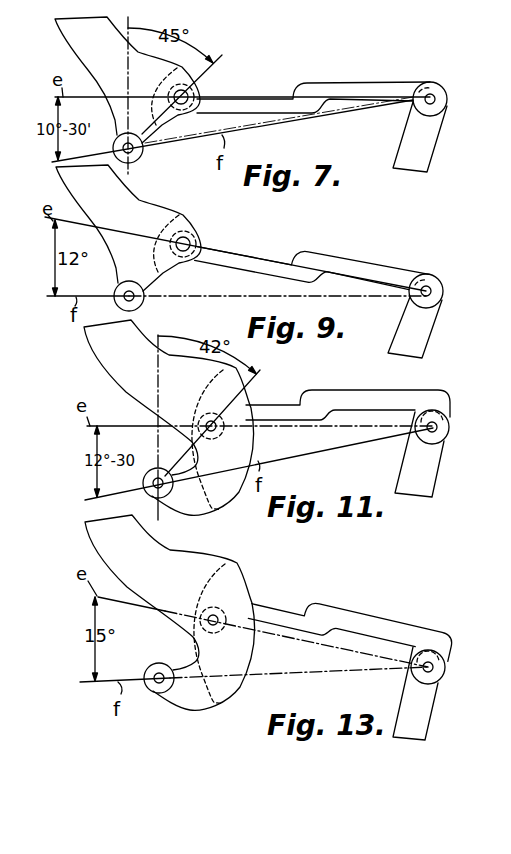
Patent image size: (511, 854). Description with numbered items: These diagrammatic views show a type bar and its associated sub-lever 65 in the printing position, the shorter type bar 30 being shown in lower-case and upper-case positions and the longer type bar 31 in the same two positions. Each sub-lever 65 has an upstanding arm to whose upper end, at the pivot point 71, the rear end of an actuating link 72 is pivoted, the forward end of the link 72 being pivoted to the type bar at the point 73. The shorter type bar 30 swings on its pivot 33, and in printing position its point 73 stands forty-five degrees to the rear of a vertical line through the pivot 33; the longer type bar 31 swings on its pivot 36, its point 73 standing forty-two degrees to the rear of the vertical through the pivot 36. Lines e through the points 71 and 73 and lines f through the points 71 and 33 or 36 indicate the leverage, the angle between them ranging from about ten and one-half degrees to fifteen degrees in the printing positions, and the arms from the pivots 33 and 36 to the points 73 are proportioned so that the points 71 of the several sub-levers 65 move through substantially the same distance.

In FIG. 7, the type bar 30 is at (127, 80).
In FIG. 9, the type bar 30 is at (128, 228).
In FIG. 11, the type bar 31 is at (168, 417).
In FIG. 13, the type bar 31 is at (169, 612).
In FIG. 7, the pivot 33 is at (137, 159).
In FIG. 9, the pivot 33 is at (129, 289).
In FIG. 11, the pivot 36 is at (158, 502).
In FIG. 13, the pivot 36 is at (159, 672).
In FIG. 7, the pivot point 73 is at (190, 96).
In FIG. 9, the pivot point 73 is at (189, 242).
In FIG. 11, the pivot point 73 is at (213, 432).
In FIG. 13, the pivot point 73 is at (213, 626).
In FIG. 7, the actuating link 72 is at (320, 87).
In FIG. 9, the actuating link 72 is at (329, 261).
In FIG. 11, the actuating link 72 is at (327, 395).
In FIG. 13, the actuating link 72 is at (343, 615).
In FIG. 7, the pivot point 71 is at (430, 93).
In FIG. 9, the pivot point 71 is at (427, 286).
In FIG. 11, the pivot point 71 is at (433, 422).
In FIG. 13, the pivot point 71 is at (433, 668).
In FIG. 7, the sub-lever 65 is at (433, 153).
In FIG. 9, the sub-lever 65 is at (401, 337).
In FIG. 11, the sub-lever 65 is at (415, 488).
In FIG. 13, the sub-lever 65 is at (407, 732).